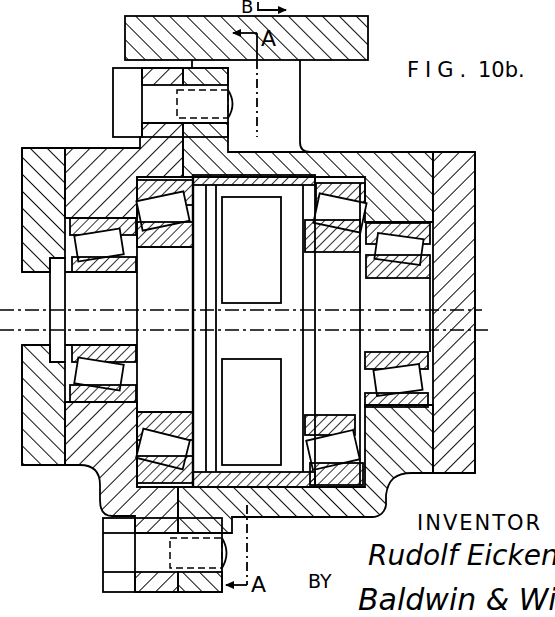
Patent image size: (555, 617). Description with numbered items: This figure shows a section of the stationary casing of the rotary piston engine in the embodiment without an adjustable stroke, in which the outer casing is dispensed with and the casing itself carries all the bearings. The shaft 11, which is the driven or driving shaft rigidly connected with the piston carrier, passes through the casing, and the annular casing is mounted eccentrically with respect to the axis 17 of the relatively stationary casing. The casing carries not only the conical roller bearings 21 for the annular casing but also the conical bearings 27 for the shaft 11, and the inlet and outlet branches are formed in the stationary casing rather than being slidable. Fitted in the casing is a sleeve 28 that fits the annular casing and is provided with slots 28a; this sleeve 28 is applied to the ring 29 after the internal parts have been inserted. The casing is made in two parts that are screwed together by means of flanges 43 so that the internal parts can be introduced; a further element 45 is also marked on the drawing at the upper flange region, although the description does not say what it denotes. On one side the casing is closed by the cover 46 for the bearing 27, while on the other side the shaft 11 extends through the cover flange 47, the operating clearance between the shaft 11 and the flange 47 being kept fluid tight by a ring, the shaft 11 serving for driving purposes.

The shaft 11 is at (80, 309).
The axis of the relatively stationary casing 17 is at (147, 331).
The conical roller bearings 21 is at (348, 218).
The conical bearings 27 is at (405, 248).
The sleeve 28 is at (257, 185).
The slots 28a is at (272, 279).
The ring 29 is at (191, 185).
The flanges 43 is at (223, 516).
The upper boss bore 45 is at (183, 148).
The cover 46 is at (448, 470).
The cover flange 47 is at (42, 437).